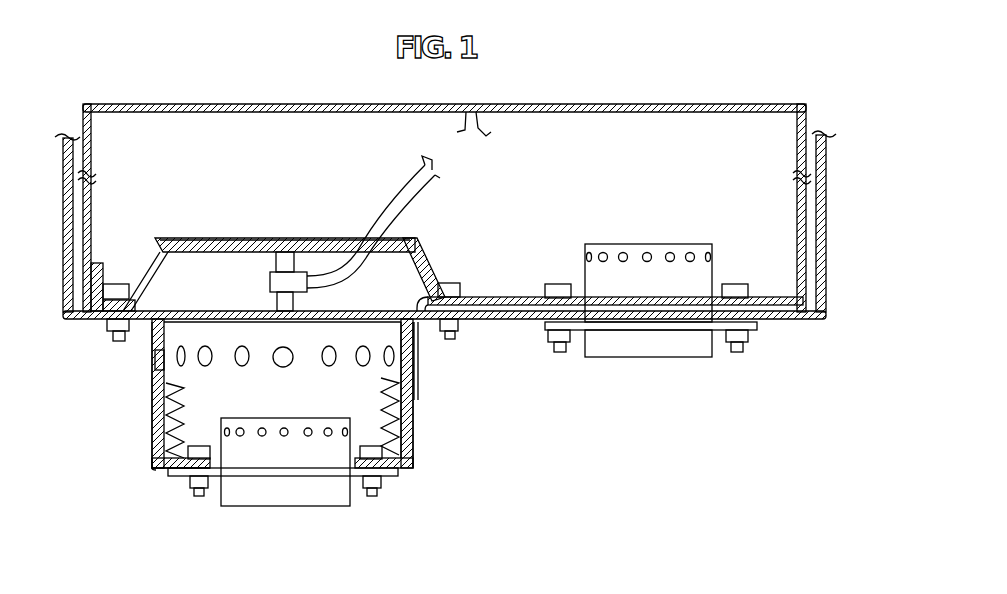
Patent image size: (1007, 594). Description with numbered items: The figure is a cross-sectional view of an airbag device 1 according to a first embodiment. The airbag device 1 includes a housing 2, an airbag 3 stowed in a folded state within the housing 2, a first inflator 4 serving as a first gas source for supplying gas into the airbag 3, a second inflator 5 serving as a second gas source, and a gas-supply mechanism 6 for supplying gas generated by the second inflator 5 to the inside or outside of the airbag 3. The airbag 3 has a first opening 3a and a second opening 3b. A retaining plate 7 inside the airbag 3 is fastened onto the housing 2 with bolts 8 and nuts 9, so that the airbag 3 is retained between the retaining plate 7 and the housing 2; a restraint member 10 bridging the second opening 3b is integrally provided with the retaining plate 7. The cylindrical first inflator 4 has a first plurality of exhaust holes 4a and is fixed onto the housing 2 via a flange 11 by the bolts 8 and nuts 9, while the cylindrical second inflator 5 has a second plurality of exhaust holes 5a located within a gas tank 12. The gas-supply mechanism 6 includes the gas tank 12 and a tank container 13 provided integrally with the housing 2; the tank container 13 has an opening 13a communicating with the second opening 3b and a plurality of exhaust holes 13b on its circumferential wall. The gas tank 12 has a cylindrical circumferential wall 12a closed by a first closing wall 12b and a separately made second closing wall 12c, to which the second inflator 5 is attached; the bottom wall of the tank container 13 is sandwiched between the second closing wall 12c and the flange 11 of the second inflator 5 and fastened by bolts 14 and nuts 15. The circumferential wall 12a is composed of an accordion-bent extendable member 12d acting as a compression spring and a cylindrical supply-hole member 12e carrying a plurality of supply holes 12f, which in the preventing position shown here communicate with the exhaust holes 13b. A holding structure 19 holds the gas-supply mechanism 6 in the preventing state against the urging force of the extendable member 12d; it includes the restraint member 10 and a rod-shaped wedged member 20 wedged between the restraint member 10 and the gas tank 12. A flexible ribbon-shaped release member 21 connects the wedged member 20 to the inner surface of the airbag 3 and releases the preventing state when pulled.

The airbag device 1 is at (777, 103).
The housing 2 is at (787, 320).
The airbag 3 is at (91, 206).
The first opening 3a is at (726, 283).
The second opening 3b is at (429, 266).
The first inflator 4 is at (635, 243).
The first plurality of exhaust holes 4a is at (655, 243).
The second inflator 5 is at (280, 506).
The second plurality of exhaust holes 5a is at (307, 437).
The gas-supply mechanism 6 is at (153, 460).
The retaining plate 7 is at (493, 296).
The bolts 8 is at (115, 283).
The nuts 9 is at (113, 342).
The restraint member 10 is at (245, 238).
The flange 11 is at (355, 477).
The gas tank 12 is at (343, 318).
The circumferential wall 12a is at (168, 335).
The first closing wall 12b is at (354, 314).
The second closing wall 12c is at (392, 470).
The extendable member 12d is at (396, 385).
The supply-hole member 12e is at (398, 333).
The supply holes 12f is at (280, 368).
The tank container 13 is at (415, 428).
The opening 13a is at (166, 318).
The exhaust holes 13b is at (156, 365).
The bolts 14 is at (186, 433).
The nuts 15 is at (196, 489).
The holding structure 19 is at (198, 238).
The wedged member 20 is at (274, 301).
The release member 21 is at (396, 190).